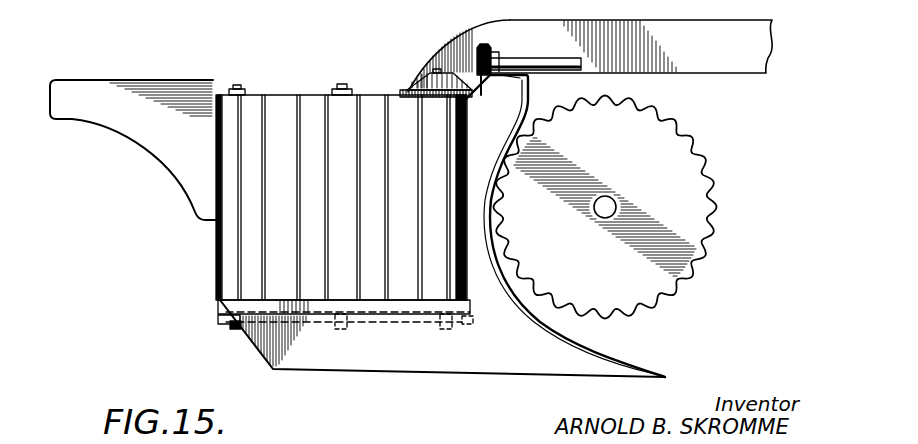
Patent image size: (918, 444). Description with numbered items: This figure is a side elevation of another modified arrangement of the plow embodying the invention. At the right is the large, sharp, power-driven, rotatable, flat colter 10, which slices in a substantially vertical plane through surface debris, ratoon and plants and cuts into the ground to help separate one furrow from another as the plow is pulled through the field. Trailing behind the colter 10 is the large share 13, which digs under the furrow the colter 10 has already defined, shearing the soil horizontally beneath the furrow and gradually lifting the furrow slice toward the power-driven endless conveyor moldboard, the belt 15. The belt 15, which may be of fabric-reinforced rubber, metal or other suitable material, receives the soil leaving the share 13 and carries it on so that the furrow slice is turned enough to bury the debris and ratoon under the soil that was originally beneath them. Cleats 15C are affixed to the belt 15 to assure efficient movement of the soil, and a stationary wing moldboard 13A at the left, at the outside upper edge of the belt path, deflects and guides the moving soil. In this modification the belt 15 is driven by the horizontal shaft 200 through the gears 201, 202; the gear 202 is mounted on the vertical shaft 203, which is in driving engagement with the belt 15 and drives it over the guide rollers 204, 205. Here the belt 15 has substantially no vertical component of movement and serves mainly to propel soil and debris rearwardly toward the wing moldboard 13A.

The colter 10 is at (605, 207).
The share 13 is at (633, 362).
The stationary wing moldboard 13A is at (107, 87).
The belt 15 is at (278, 102).
The cleats 15C is at (298, 95).
The horizontal shaft 200 is at (545, 48).
The gear 201 is at (478, 46).
The gear 202 is at (422, 72).
The vertical shaft 203 is at (411, 91).
The guide roller 204 is at (342, 86).
The guide roller 205 is at (237, 87).